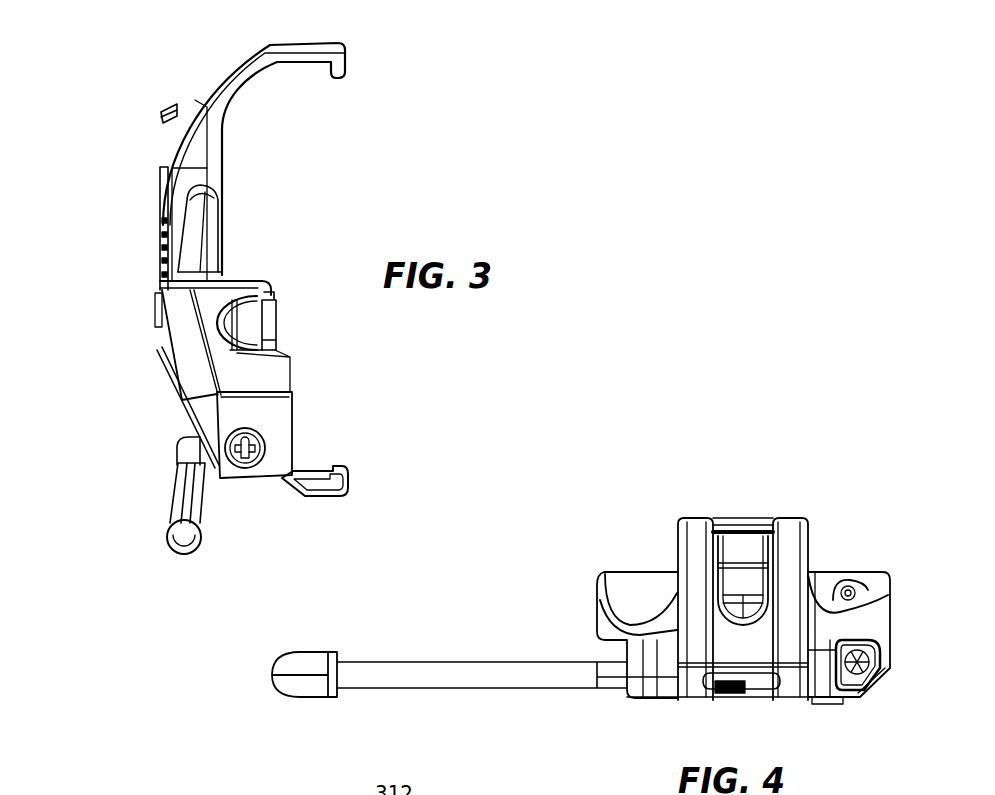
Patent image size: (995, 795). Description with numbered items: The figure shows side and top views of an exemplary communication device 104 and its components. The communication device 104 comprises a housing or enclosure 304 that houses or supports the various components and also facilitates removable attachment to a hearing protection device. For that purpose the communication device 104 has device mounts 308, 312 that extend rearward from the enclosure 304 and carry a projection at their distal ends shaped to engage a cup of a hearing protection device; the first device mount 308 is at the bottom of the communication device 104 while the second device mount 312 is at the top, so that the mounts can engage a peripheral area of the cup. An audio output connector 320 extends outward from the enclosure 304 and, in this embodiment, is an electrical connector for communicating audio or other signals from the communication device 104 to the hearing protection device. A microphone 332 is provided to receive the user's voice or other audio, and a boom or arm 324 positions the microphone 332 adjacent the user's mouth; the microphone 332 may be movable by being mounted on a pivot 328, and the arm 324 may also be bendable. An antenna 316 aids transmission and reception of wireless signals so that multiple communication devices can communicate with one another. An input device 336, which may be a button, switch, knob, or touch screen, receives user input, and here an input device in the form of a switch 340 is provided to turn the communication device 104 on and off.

In FIG. 3, the communication device 104 is at (84, 234).
In FIG. 4, the communication device 104 is at (738, 442).
In FIG. 3, the enclosure 304 is at (160, 198).
In FIG. 4, the enclosure 304 is at (642, 582).
In FIG. 3, the first device mount 308 is at (307, 503).
In FIG. 4, the first device mount 308 is at (742, 517).
In FIG. 3, the second device mount 312 is at (222, 65).
In FIG. 4, the second device mount 312 is at (693, 517).
In FIG. 3, the antenna 316 is at (207, 195).
In FIG. 4, the antenna 316 is at (862, 693).
In FIG. 3, the audio output connector 320 is at (275, 327).
In FIG. 4, the audio output connector 320 is at (852, 585).
In FIG. 3, the arm 324 is at (207, 503).
In FIG. 4, the arm 324 is at (490, 662).
In FIG. 3, the pivot 328 is at (175, 458).
In FIG. 3, the microphone 332 is at (165, 540).
In FIG. 4, the microphone 332 is at (272, 678).
In FIG. 3, the input device 336 is at (257, 423).
In FIG. 3, the switch 340 is at (177, 104).
In FIG. 4, the switch 340 is at (732, 697).